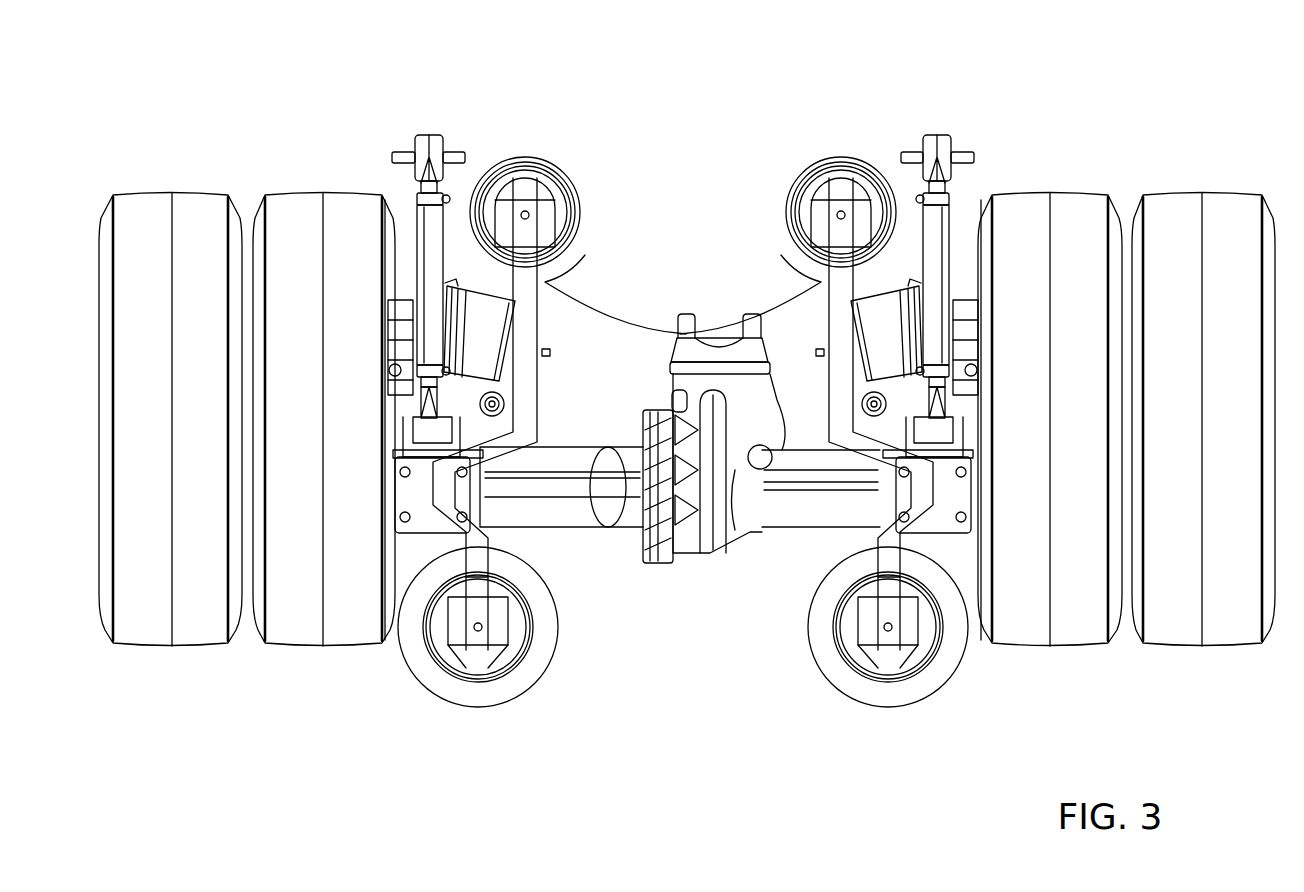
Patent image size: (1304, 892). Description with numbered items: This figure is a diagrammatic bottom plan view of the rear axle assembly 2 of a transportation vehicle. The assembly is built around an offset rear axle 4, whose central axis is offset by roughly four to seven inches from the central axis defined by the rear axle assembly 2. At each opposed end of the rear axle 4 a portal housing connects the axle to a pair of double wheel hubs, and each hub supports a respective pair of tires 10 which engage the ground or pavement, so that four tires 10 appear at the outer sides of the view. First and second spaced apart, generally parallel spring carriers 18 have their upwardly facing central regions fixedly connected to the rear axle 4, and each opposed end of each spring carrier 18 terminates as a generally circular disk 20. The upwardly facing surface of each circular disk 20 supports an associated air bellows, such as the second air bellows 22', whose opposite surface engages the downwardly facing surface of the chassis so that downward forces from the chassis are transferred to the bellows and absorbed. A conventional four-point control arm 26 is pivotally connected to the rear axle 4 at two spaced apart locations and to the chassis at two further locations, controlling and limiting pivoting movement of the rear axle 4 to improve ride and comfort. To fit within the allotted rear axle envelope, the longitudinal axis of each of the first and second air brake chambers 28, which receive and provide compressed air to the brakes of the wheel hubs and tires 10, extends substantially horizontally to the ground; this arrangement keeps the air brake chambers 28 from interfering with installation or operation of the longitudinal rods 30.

The rear axle assembly 2 is at (713, 148).
The rear axle 4 is at (575, 510).
The tires 10 is at (125, 622).
The spring carriers 18 is at (585, 255).
The circular disk 20 is at (510, 165).
The second air bellows 22' is at (478, 667).
The four-point control arm 26 is at (623, 350).
The air brake chambers 28 is at (490, 345).
The longitudinal rods 30 is at (427, 243).